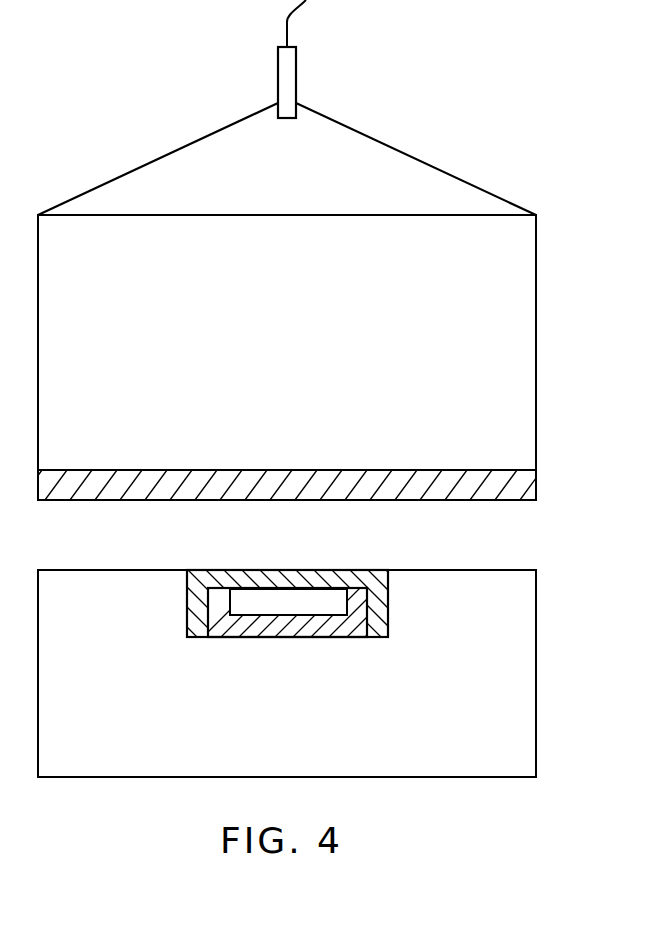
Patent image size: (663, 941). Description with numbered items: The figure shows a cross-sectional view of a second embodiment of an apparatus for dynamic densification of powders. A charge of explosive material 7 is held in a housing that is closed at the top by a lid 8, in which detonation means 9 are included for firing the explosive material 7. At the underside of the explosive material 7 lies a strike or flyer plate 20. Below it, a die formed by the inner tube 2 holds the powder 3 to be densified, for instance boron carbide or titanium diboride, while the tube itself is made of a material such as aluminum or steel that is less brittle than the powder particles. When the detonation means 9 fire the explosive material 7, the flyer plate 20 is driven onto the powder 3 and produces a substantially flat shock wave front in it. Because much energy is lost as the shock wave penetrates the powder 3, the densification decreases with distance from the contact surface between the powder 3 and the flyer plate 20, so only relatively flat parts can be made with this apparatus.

The inner tube 2 is at (388, 633).
The powder 3 is at (263, 598).
The explosive material 7 is at (175, 319).
The lid 8 is at (403, 180).
The detonation means 9 is at (288, 80).
The flyer plate 20 is at (430, 482).